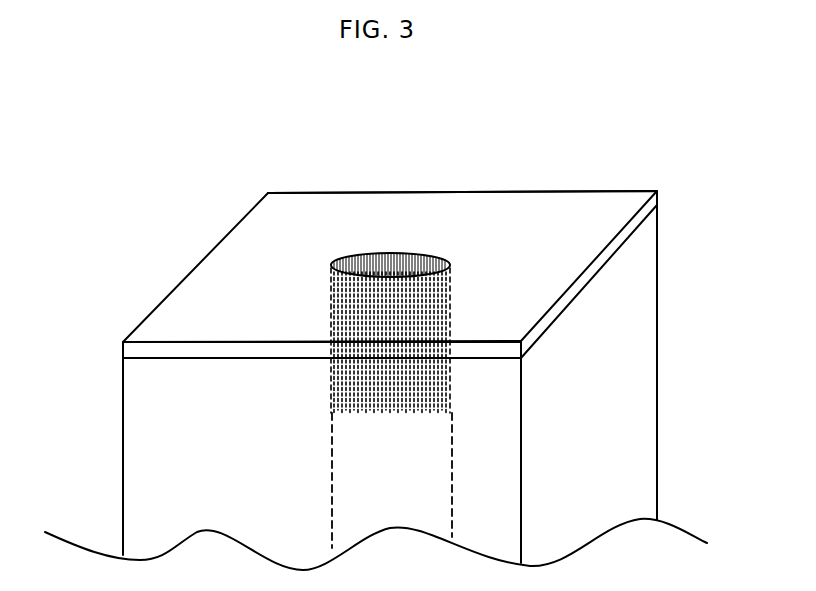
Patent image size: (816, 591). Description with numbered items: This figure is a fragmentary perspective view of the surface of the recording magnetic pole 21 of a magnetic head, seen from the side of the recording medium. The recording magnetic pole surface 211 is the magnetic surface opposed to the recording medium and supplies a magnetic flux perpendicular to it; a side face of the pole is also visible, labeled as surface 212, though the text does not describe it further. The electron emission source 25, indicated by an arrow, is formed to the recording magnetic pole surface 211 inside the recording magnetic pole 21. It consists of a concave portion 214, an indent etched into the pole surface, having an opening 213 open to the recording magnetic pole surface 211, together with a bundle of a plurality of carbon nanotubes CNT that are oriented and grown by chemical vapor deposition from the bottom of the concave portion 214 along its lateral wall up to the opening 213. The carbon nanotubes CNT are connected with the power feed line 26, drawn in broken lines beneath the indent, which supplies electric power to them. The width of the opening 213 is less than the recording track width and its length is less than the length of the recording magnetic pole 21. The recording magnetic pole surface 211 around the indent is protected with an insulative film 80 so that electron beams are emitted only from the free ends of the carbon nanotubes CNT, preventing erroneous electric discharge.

The recording magnetic pole 21 is at (613, 323).
The insulative film 80 is at (657, 202).
The recording magnetic pole surface 211 is at (328, 212).
The side surface of substrate 212 is at (157, 340).
The opening 213 is at (448, 263).
The concave portion 214 is at (330, 310).
The power feed line 26 is at (345, 487).
The electron emission source 25 is at (427, 237).
The carbon nanotubes CNT is at (380, 255).